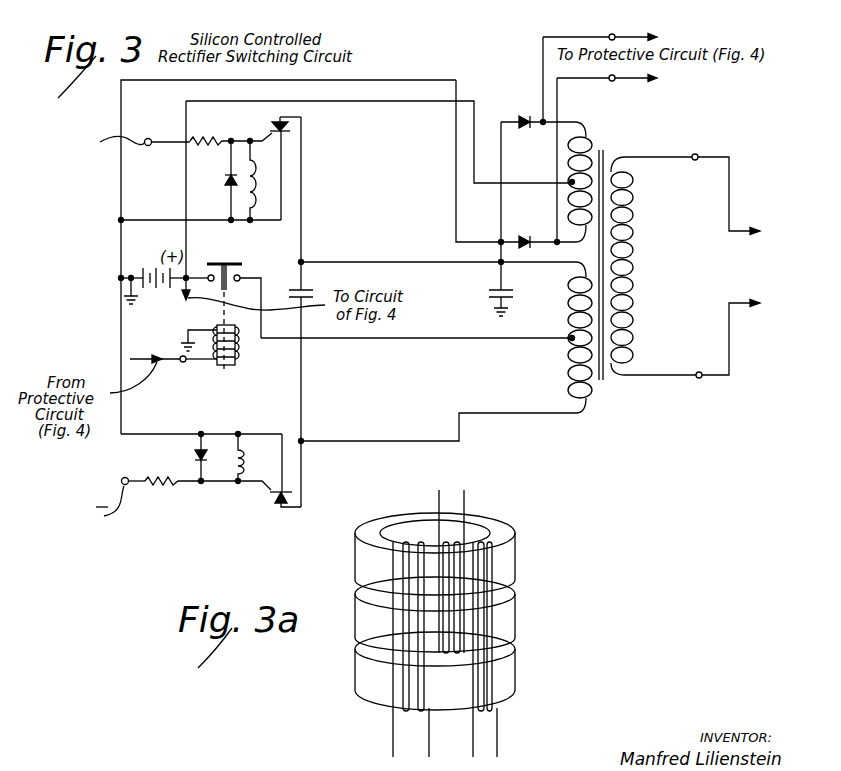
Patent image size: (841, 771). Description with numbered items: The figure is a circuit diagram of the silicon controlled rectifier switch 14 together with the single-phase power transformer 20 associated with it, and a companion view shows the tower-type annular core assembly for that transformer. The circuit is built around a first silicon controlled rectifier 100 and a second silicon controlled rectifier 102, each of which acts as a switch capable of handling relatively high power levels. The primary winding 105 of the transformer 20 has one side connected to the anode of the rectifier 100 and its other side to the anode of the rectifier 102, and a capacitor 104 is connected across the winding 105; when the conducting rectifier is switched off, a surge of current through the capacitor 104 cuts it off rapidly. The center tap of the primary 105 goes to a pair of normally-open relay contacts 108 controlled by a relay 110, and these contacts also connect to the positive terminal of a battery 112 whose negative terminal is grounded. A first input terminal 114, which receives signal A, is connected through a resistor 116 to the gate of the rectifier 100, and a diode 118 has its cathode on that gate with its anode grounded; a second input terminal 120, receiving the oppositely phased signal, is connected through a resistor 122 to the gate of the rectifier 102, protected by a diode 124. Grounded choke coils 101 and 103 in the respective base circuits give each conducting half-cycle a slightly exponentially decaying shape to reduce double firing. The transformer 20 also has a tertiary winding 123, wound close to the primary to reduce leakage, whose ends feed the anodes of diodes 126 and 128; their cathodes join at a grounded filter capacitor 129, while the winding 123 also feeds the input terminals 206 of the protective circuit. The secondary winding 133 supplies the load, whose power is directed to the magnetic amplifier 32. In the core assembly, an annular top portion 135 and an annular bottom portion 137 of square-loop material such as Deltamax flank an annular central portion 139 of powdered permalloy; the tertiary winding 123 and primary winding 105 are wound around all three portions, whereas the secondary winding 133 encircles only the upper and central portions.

In FIG. 3, the silicon controlled rectifier switch 14 is at (311, 247).
In FIG. 3, the single-phase power transformer 20 is at (614, 392).
In FIG. 3A, the single-phase power transformer 20 is at (470, 600).
In FIG. 3, the magnetic amplifier 32 is at (747, 266).
In FIG. 3, the first silicon controlled rectifier 100 is at (268, 136).
In FIG. 3, the choke coil 101 is at (257, 196).
In FIG. 3, the second silicon controlled rectifier 102 is at (272, 497).
In FIG. 3, the choke coil 103 is at (243, 447).
In FIG. 3, the capacitor 104 is at (307, 290).
In FIG. 3, the primary winding 105 is at (570, 372).
In FIG. 3A, the primary winding 105 is at (492, 633).
In FIG. 3, the normally-open relay contacts 108 is at (240, 262).
In FIG. 3, the relay 110 is at (236, 348).
In FIG. 3, the battery 112 is at (165, 300).
In FIG. 3, the first input terminal 114 is at (152, 147).
In FIG. 3, the resistor 116 is at (222, 137).
In FIG. 3, the diode 118 is at (228, 183).
In FIG. 3, the second input terminal 120 is at (127, 477).
In FIG. 3, the resistor 122 is at (158, 486).
In FIG. 3, the tertiary winding 123 is at (590, 136).
In FIG. 3A, the tertiary winding 123 is at (393, 668).
In FIG. 3, the diode 124 is at (208, 452).
In FIG. 3, the diode 126 is at (532, 130).
In FIG. 3, the diode 128 is at (542, 218).
In FIG. 3, the filter capacitor 129 is at (493, 298).
In FIG. 3, the secondary winding 133 is at (632, 208).
In FIG. 3A, the secondary winding 133 is at (440, 570).
In FIG. 3A, the annular top portion 135 is at (508, 560).
In FIG. 3A, the annular bottom portion 137 is at (508, 672).
In FIG. 3A, the annular central portion 139 is at (508, 612).
In FIG. 3, the input terminals 206 is at (615, 33).